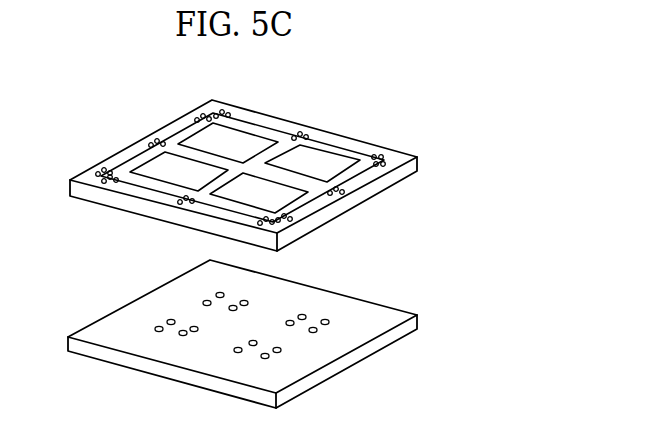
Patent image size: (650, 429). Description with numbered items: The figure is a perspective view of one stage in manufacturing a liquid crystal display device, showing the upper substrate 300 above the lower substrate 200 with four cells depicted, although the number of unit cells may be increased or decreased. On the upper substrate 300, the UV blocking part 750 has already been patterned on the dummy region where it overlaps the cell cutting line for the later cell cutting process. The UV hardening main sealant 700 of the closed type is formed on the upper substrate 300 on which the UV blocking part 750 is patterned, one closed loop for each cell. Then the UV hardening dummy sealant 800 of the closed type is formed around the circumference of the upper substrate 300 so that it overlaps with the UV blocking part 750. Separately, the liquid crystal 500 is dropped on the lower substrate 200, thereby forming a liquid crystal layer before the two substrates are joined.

The lower substrate 200 is at (419, 317).
The upper substrate 300 is at (419, 159).
The liquid crystal 500 is at (327, 320).
The UV hardening main sealant 700 is at (330, 153).
The UV blocking part 750 is at (160, 138).
The UV hardening dummy sealant 800 is at (263, 125).